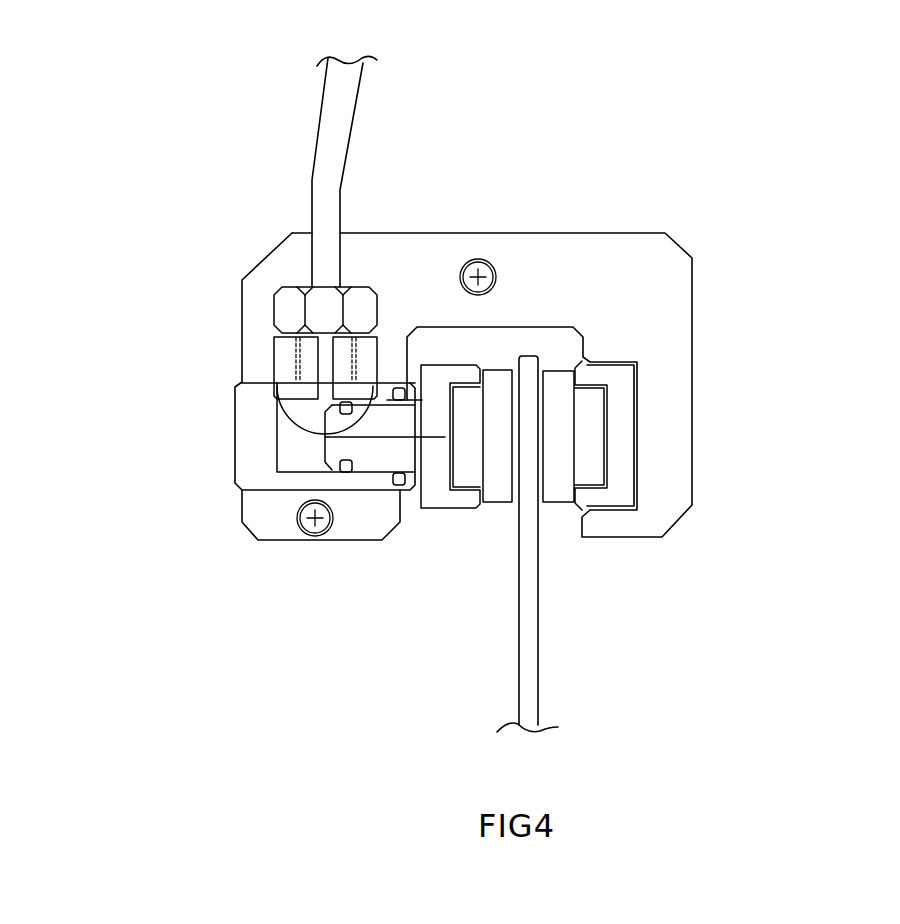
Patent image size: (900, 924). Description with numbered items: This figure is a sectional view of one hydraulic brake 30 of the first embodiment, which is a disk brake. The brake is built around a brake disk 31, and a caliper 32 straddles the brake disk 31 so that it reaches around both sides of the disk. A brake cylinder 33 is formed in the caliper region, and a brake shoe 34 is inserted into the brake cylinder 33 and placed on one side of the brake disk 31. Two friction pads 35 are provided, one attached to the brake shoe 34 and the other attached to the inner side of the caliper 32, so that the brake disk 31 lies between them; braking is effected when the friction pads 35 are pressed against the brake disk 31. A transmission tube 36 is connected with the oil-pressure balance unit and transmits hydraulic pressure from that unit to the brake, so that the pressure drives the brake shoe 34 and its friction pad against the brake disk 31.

The hydraulic brake 30 is at (715, 410).
The brake disk 31 is at (532, 685).
The caliper 32 is at (405, 257).
The brake cylinder 33 is at (303, 455).
The brake shoe 34 is at (374, 457).
The friction pads 35 is at (500, 470).
The transmission tube 36 is at (325, 167).